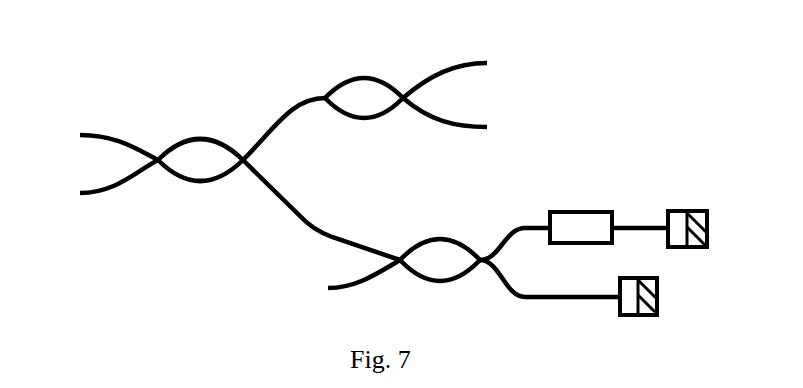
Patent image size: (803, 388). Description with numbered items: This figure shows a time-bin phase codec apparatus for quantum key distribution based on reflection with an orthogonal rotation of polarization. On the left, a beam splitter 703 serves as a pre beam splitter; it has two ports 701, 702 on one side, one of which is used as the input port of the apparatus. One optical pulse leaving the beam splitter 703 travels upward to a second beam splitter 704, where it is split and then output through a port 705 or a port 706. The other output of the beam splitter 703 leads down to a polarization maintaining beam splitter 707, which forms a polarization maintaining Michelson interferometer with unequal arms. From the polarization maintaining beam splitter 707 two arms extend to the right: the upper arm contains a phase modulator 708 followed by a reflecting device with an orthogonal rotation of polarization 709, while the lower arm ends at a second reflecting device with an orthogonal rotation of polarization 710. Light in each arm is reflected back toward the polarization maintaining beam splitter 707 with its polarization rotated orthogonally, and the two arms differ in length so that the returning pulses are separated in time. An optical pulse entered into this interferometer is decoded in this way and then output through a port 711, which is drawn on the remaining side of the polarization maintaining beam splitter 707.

The port 701 is at (99, 142).
The port 702 is at (99, 182).
The beam splitter 703 is at (200, 160).
The beam splitter 704 is at (364, 98).
The port 705 is at (462, 76).
The port 706 is at (462, 118).
The polarization maintaining beam splitter 707 is at (440, 260).
The phase modulator 708 is at (581, 227).
The reflecting device with an orthogonal rotation of polarization 709 is at (687, 217).
The reflecting device with an orthogonal rotation of polarization 710 is at (638, 285).
The port 711 is at (346, 280).